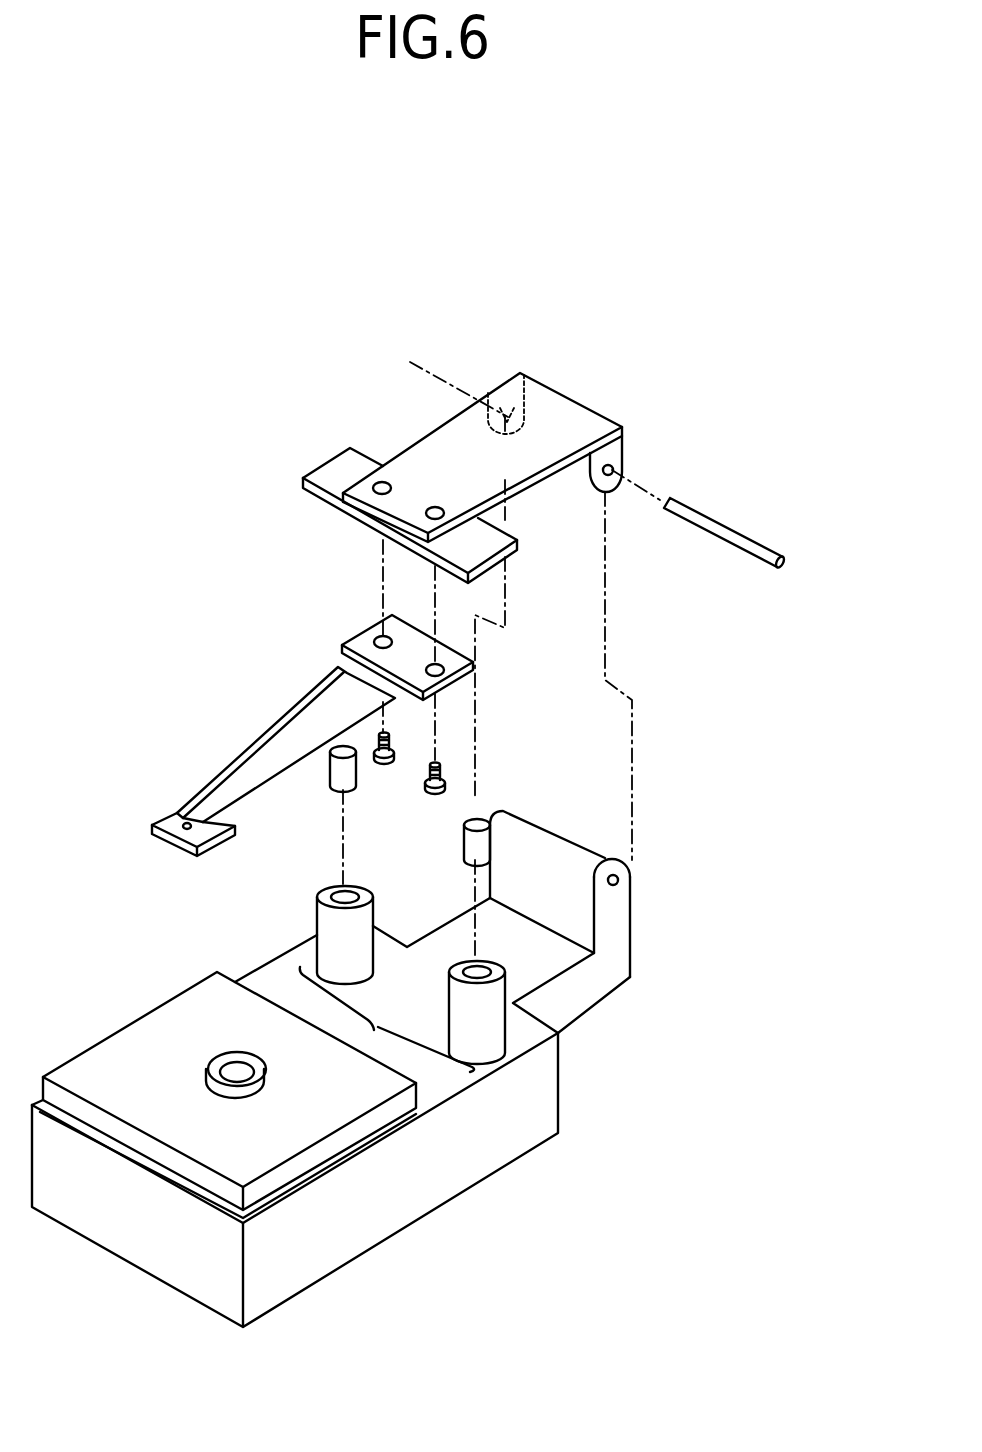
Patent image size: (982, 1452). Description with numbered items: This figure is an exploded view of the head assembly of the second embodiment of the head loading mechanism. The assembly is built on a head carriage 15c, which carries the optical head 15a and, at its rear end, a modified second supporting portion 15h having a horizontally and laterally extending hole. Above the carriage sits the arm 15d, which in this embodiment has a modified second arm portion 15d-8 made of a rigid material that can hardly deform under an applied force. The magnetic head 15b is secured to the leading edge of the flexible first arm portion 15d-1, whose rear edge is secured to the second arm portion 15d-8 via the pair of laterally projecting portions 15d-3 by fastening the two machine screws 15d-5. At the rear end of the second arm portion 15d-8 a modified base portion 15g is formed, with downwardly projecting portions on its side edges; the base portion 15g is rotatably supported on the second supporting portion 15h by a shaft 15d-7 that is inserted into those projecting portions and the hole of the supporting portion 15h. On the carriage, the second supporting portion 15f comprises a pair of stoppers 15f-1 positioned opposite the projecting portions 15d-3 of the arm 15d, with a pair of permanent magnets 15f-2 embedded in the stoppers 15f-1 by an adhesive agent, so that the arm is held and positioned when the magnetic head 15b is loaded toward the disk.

The optical head 15a is at (228, 1073).
The magnetic head 15b is at (168, 820).
The head carriage 15c is at (543, 1122).
The arm 15d is at (337, 322).
The first arm portion 15d-1 is at (282, 737).
The laterally projecting portions 15d-3 is at (300, 483).
The machine screws 15d-5 is at (427, 787).
The shaft 15d-7 is at (737, 532).
The second arm portion 15d-8 is at (422, 463).
The second supporting portion 15f is at (374, 1030).
The stoppers 15f-1 is at (327, 932).
The permanent magnets 15f-2 is at (473, 848).
The base portion 15g is at (557, 410).
The second supporting portion 15h is at (613, 913).